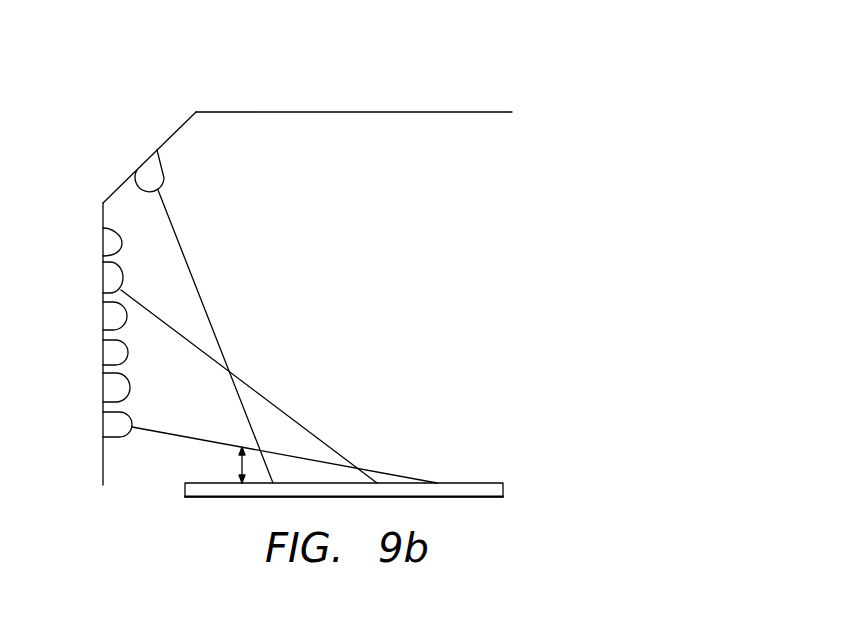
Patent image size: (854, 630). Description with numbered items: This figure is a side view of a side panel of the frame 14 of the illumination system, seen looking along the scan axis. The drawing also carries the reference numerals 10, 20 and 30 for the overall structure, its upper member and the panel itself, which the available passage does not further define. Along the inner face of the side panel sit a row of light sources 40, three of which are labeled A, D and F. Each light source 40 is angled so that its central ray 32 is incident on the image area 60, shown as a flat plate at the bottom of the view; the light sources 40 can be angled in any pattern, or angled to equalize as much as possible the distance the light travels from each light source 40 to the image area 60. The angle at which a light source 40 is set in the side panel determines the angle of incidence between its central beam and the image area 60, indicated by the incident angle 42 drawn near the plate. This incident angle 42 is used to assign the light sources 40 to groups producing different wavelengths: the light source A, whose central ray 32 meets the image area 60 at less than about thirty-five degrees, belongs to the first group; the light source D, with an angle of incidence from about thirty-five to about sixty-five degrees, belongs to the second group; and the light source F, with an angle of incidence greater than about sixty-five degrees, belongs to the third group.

The lighting assembly 10 is at (412, 75).
The frame 14 is at (113, 148).
The top cover 20 is at (277, 111).
The side wall 30 is at (103, 249).
The light sources 40 is at (163, 162).
The central ray 32 is at (145, 304).
The incident angle 42 is at (240, 462).
The image area 60 is at (470, 483).
The light source A is at (103, 422).
The light source D is at (118, 265).
The light source F is at (165, 180).